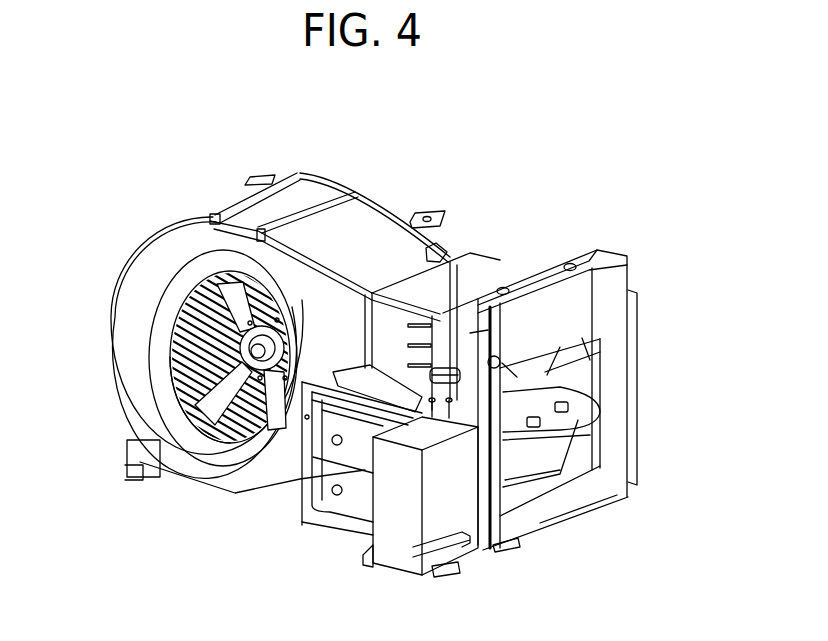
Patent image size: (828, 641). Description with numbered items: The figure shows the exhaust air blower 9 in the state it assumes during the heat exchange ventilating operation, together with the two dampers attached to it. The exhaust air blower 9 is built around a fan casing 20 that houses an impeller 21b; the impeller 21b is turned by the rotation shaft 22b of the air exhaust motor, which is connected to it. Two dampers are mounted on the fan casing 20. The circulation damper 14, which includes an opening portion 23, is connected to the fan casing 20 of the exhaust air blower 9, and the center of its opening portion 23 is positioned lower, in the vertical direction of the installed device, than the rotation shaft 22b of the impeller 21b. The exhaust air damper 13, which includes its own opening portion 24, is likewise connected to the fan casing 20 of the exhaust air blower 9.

The exhaust air blower 9 is at (358, 155).
The fan casing 20 is at (263, 210).
The rotation shaft 22b is at (245, 346).
The impeller 21b is at (190, 410).
The exhaust air damper 13 is at (575, 412).
The opening portion 24 is at (567, 462).
The circulation damper 14 is at (335, 490).
The opening portion 23 is at (360, 522).